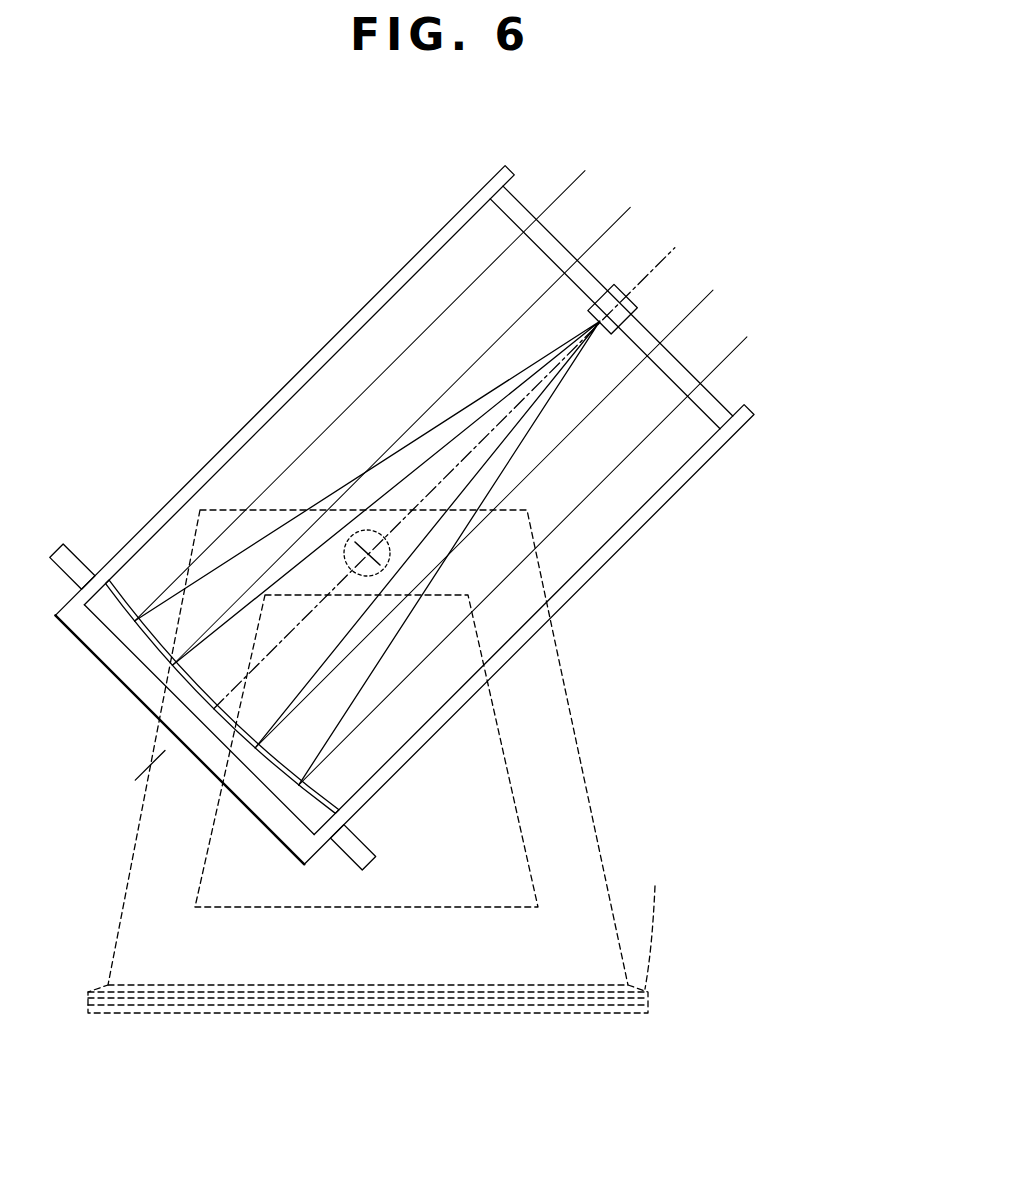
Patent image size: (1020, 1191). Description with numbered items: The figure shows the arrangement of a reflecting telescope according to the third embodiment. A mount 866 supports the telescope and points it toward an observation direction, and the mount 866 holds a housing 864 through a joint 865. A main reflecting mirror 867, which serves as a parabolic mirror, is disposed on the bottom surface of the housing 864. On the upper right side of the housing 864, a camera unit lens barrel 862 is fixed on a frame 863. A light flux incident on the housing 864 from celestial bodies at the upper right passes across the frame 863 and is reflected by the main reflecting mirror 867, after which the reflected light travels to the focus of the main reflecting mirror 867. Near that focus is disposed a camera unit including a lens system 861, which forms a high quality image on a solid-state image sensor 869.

The lens system 861 is at (592, 301).
The camera unit lens barrel 862 is at (613, 285).
The frame 863 is at (550, 232).
The housing 864 is at (188, 486).
The joint 865 is at (391, 553).
The mount 866 is at (606, 877).
The main reflecting mirror 867 is at (300, 770).
The solid-state image sensor 869 is at (630, 297).